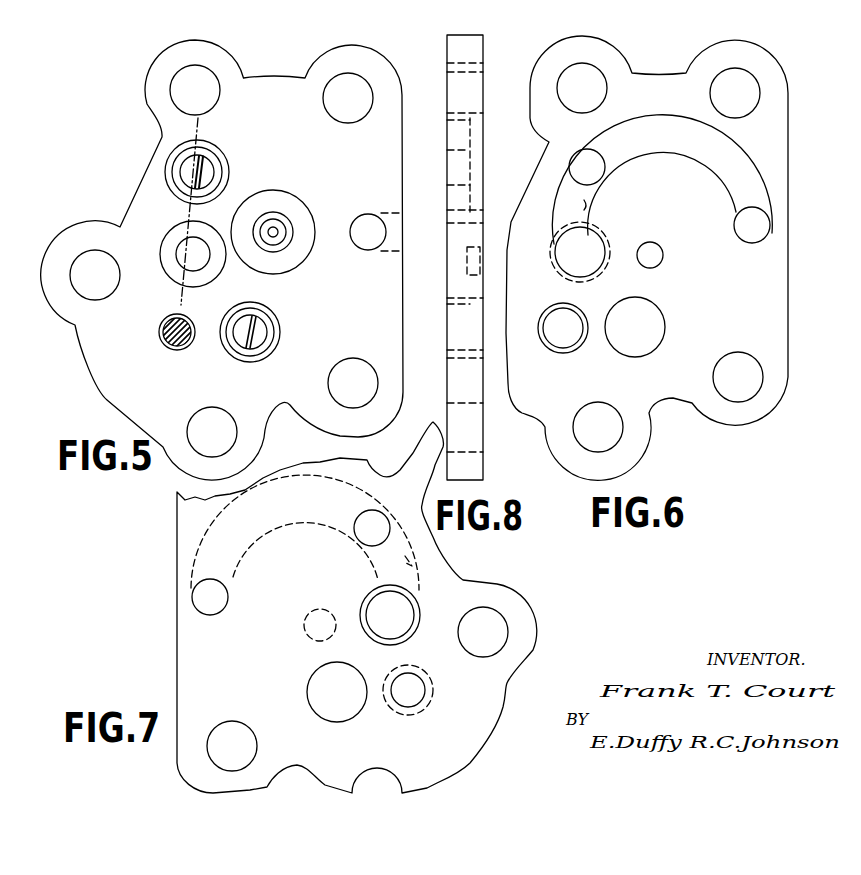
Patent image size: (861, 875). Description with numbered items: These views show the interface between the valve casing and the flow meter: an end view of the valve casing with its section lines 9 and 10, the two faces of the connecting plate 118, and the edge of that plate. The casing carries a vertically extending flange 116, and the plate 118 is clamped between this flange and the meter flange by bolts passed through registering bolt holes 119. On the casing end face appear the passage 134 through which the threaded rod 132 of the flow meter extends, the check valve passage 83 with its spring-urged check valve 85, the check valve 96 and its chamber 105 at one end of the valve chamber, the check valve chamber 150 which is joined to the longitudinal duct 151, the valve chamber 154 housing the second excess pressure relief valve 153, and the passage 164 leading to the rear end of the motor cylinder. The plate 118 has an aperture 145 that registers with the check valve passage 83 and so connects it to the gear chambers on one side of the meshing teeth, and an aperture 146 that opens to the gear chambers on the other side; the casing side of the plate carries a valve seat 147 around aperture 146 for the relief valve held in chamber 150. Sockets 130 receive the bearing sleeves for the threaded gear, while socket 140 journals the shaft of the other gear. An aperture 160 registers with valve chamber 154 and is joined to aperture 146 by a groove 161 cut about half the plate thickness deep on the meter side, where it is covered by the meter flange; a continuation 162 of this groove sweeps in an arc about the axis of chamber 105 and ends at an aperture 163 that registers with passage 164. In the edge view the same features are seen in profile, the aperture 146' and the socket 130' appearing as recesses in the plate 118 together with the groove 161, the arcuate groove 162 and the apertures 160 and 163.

In FIG. 5, the section line 9— 9 is at (72, 258).
In FIG. 5, the section line 10— 10 is at (198, 118).
In FIG. 5, the check valve passage 83 is at (280, 330).
In FIG. 5, the check valve 85 is at (257, 345).
In FIG. 5, the check valve 96 is at (287, 218).
In FIG. 5, the chamber 105 is at (273, 192).
In FIG. 5, the vertically extending flange 116 is at (163, 55).
In FIG. 6, the connecting plate 118 is at (647, 258).
In FIG. 7, the connecting plate 118 is at (357, 607).
In FIG. 8, the connecting plate 118 is at (470, 44).
In FIG. 5, the bolt holes 119 is at (224, 261).
In FIG. 6, the bolt holes 119 is at (660, 257).
In FIG. 7, the bolt holes 119 is at (357, 700).
In FIG. 8, the bolt holes 119 is at (470, 70).
In FIG. 6, the socket 130 is at (563, 328).
In FIG. 7, the socket 130 is at (430, 690).
In FIG. 8, the socket 130' is at (448, 349).
In FIG. 5, the threaded rod 132 is at (173, 344).
In FIG. 5, the passage 134 is at (159, 333).
In FIG. 6, the socket 140 is at (663, 257).
In FIG. 7, the socket 140 is at (318, 611).
In FIG. 8, the socket 140 is at (453, 247).
In FIG. 6, the aperture 145 is at (635, 327).
In FIG. 7, the aperture 145 is at (337, 692).
In FIG. 8, the aperture 145 is at (462, 304).
In FIG. 6, the aperture 146 is at (580, 252).
In FIG. 7, the aperture 146 is at (390, 615).
In FIG. 8, the aperture 146' is at (446, 269).
In FIG. 6, the valve seat 147 is at (576, 283).
In FIG. 7, the valve seat 147 is at (393, 644).
In FIG. 5, the check valve chamber 150 is at (216, 277).
In FIG. 5, the duct 151 is at (193, 254).
In FIG. 5, the excess pressure relief valve 153 is at (187, 188).
In FIG. 5, the valve chamber 154 is at (229, 177).
In FIG. 6, the aperture 160 is at (587, 167).
In FIG. 7, the aperture 160 is at (372, 528).
In FIG. 8, the aperture 160 is at (456, 178).
In FIG. 6, the groove 161 is at (588, 204).
In FIG. 7, the groove 161 is at (409, 563).
In FIG. 8, the groove 161 is at (473, 168).
In FIG. 6, the continuation of the groove 162 is at (714, 130).
In FIG. 7, the continuation of the groove 162 is at (303, 483).
In FIG. 8, the continuation of the groove 162 is at (473, 121).
In FIG. 6, the aperture 163 is at (752, 225).
In FIG. 7, the aperture 163 is at (210, 597).
In FIG. 8, the aperture 163 is at (470, 213).
In FIG. 5, the passage 164 is at (376, 232).